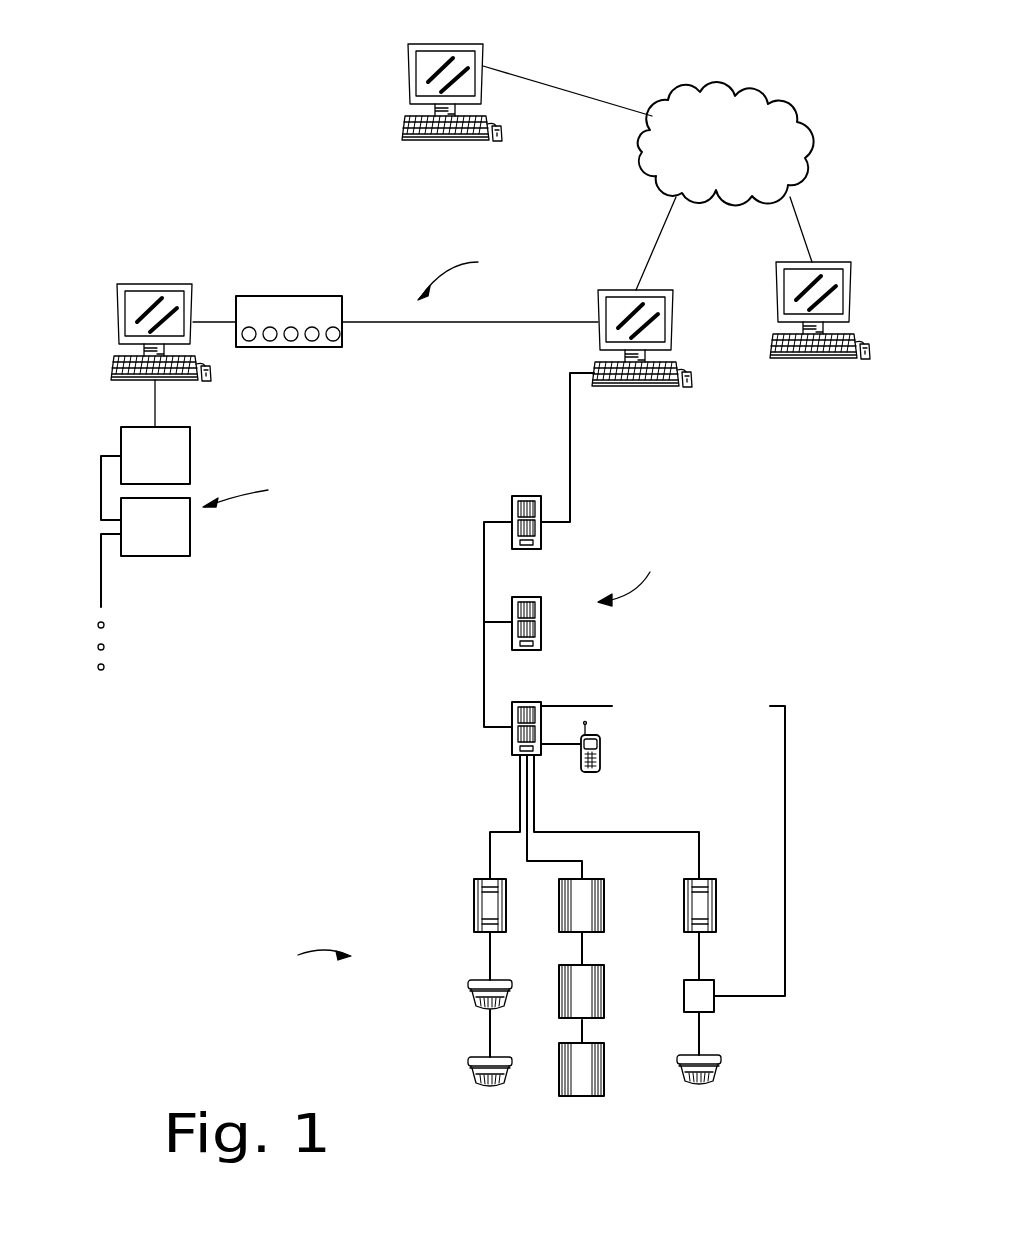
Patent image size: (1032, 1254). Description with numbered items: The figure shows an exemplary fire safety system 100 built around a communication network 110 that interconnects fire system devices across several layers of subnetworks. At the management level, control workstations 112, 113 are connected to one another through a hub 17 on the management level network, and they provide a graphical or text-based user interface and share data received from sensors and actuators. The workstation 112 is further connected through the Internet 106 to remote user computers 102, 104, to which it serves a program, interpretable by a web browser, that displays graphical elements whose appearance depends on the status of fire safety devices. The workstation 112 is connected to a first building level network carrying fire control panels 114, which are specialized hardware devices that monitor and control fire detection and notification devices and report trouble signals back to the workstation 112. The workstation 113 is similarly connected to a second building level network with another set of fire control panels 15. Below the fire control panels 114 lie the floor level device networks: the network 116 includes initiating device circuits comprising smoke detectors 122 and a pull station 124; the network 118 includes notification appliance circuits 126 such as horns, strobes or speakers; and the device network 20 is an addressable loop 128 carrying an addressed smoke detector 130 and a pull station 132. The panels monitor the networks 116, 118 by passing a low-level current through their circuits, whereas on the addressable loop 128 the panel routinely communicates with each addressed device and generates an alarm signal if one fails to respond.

The fire safety system 100 is at (170, 122).
The remote user computer 104 is at (408, 66).
The Internet 106 is at (748, 92).
The control workstation 113 is at (135, 284).
The hub 17 is at (325, 296).
The fire control workstation 112 is at (598, 305).
The remote user computer 102 is at (776, 285).
The fire control panels 15 is at (92, 487).
The fire control panels 114 is at (470, 567).
The communication network 110 is at (668, 507).
The pull station 124 is at (480, 879).
The pull station 132 is at (708, 879).
The notification appliance circuits 126 is at (604, 1067).
The device network 20 is at (790, 937).
The addressable loop 128 is at (716, 1004).
The smoke detector 130 is at (722, 1077).
The floor level network 116 is at (446, 987).
The smoke detectors 122 is at (464, 1060).
The floor level network 118 is at (590, 1135).